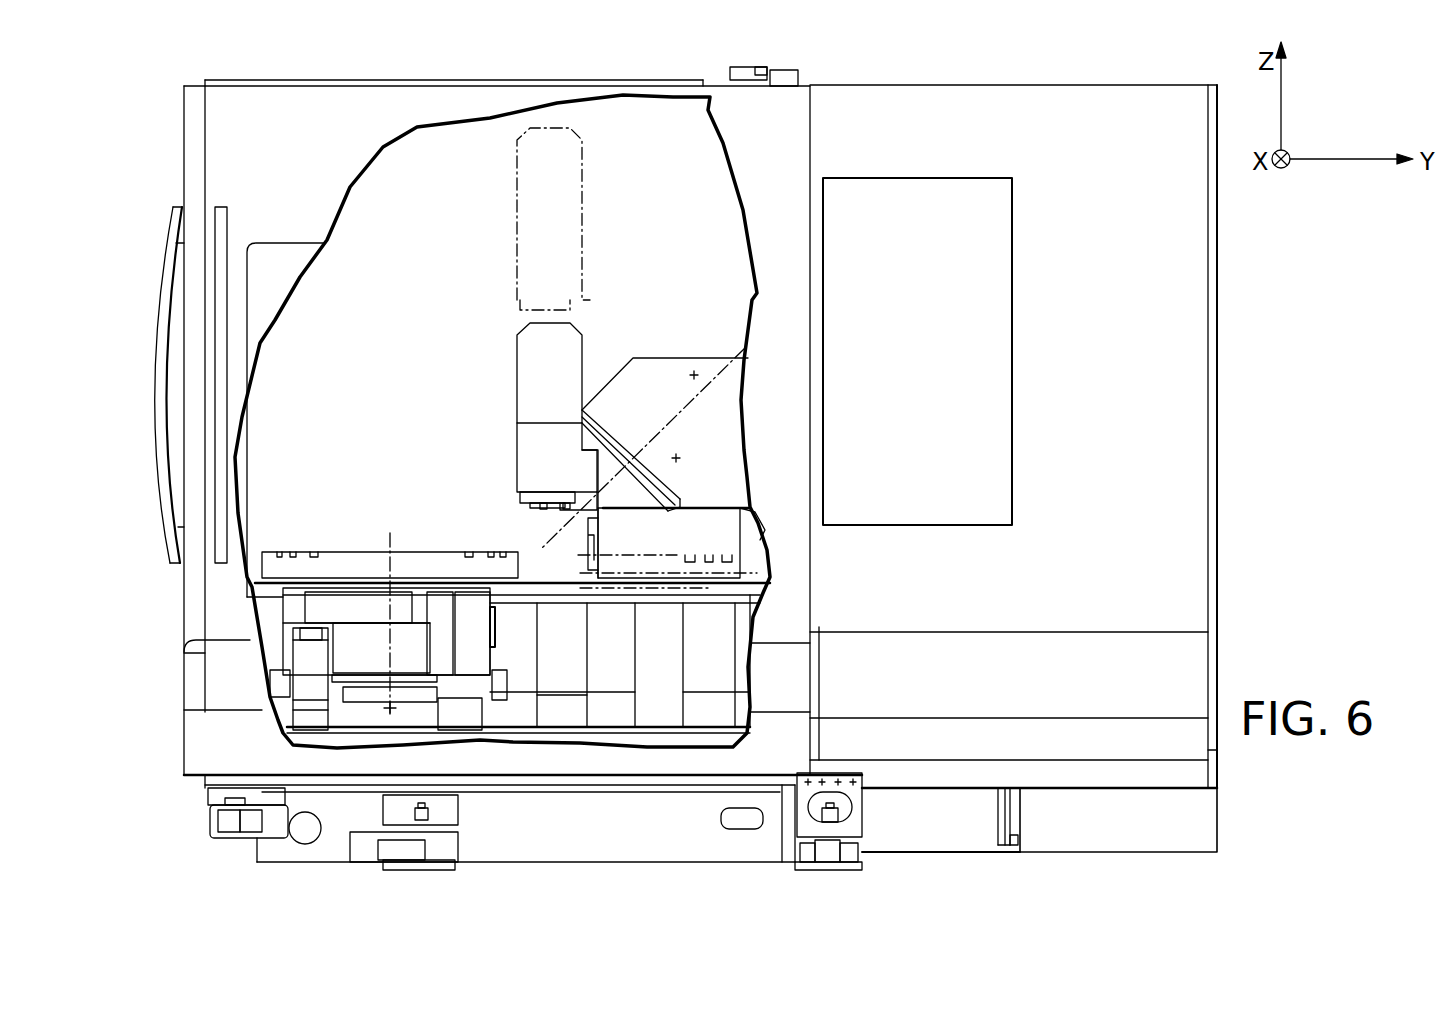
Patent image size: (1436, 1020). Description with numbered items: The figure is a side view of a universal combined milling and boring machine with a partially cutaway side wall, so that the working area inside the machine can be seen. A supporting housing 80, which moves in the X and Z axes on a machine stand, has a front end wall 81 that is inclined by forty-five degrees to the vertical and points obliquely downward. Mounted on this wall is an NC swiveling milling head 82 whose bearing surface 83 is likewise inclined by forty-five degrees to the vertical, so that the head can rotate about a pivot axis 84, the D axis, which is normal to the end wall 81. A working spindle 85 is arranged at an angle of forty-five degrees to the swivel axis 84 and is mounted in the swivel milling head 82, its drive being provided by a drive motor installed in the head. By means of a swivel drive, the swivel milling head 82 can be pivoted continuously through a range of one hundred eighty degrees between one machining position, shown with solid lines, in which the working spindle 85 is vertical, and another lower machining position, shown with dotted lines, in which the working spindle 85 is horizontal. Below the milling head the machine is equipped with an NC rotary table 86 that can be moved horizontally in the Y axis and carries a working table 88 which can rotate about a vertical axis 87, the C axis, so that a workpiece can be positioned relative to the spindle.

The supporting housing 80 is at (656, 378).
The front end wall 81 is at (598, 450).
The NC swiveling milling head 82 is at (508, 360).
The bearing surface 83 is at (665, 490).
The pivot axis 84 is at (552, 534).
The working spindle 85 is at (520, 503).
The NC rotary table 86 is at (288, 718).
The vertical axis 87 is at (378, 523).
The working table 88 is at (343, 563).